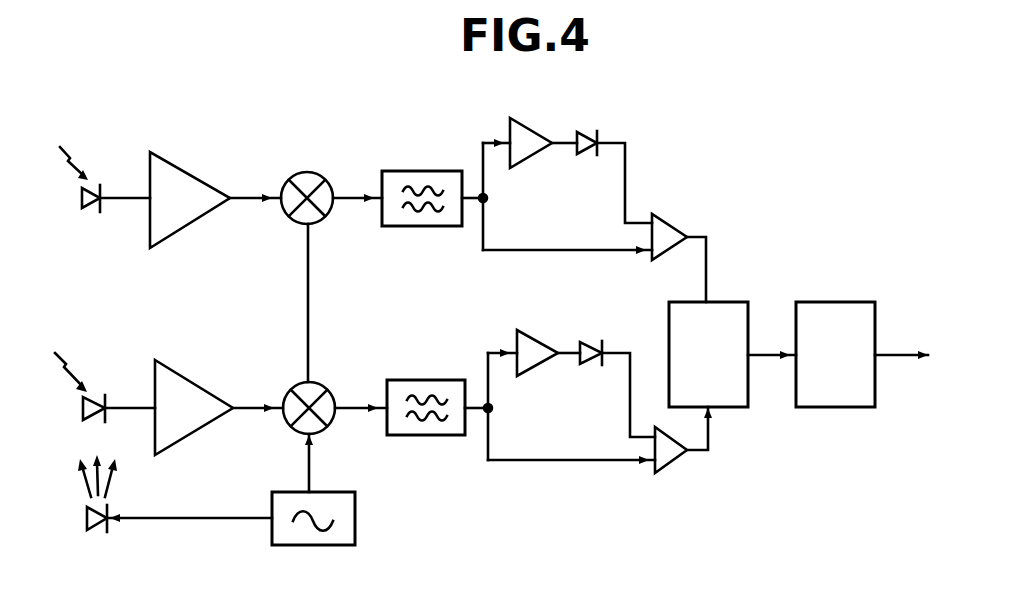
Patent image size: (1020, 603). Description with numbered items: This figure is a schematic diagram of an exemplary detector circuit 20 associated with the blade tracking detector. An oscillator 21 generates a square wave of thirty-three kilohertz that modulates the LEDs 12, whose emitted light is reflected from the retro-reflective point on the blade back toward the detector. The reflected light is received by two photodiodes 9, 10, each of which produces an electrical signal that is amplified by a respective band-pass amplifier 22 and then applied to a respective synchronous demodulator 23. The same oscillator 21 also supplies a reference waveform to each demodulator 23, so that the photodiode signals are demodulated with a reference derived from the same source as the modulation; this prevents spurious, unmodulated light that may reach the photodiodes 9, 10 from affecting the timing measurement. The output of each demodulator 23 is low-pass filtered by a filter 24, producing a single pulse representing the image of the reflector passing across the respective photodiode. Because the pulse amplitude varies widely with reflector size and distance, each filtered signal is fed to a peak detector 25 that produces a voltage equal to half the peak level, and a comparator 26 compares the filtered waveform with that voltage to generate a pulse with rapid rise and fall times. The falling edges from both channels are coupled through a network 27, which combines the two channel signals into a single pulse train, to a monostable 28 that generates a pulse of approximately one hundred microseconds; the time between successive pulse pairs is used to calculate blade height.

The photodiode 9 is at (92, 395).
The photodiode 10 is at (88, 211).
The LED 12 is at (92, 532).
The circuit 20 is at (718, 216).
The oscillator 21 is at (355, 492).
The band-pass amplifier 22 is at (188, 172).
The synchronous demodulator 23 is at (343, 127).
The low pass filter 24 is at (410, 171).
The peak detector 25 is at (537, 133).
The comparator 26 is at (666, 220).
The network 27 is at (747, 302).
The monostable 28 is at (869, 274).